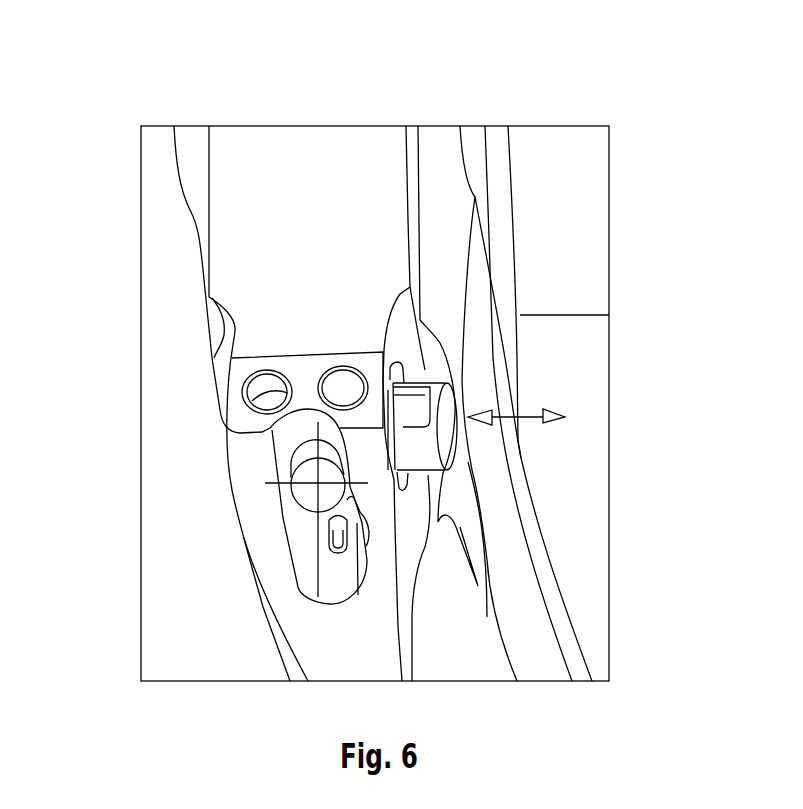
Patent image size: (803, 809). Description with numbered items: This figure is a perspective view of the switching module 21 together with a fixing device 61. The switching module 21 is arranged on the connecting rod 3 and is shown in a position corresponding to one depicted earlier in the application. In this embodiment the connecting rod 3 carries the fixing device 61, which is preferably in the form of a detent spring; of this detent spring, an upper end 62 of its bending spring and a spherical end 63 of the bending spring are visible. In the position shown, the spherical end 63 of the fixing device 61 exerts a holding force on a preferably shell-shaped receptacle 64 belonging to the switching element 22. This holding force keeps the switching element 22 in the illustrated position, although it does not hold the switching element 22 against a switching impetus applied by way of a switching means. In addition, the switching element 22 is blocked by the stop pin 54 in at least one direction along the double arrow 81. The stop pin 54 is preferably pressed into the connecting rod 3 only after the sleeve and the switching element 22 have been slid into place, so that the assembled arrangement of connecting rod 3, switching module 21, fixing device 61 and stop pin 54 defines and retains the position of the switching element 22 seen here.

The connecting rod 3 is at (345, 155).
The stop pin 54 is at (345, 390).
The switching module 21 is at (413, 378).
The switching element 22 is at (428, 445).
The double arrow 81 is at (522, 415).
The fixing device 61 is at (337, 530).
The upper end of bending spring 62 is at (372, 519).
The spherical end of bending spring 63 is at (302, 478).
The shell-shaped receptacle 64 is at (302, 447).